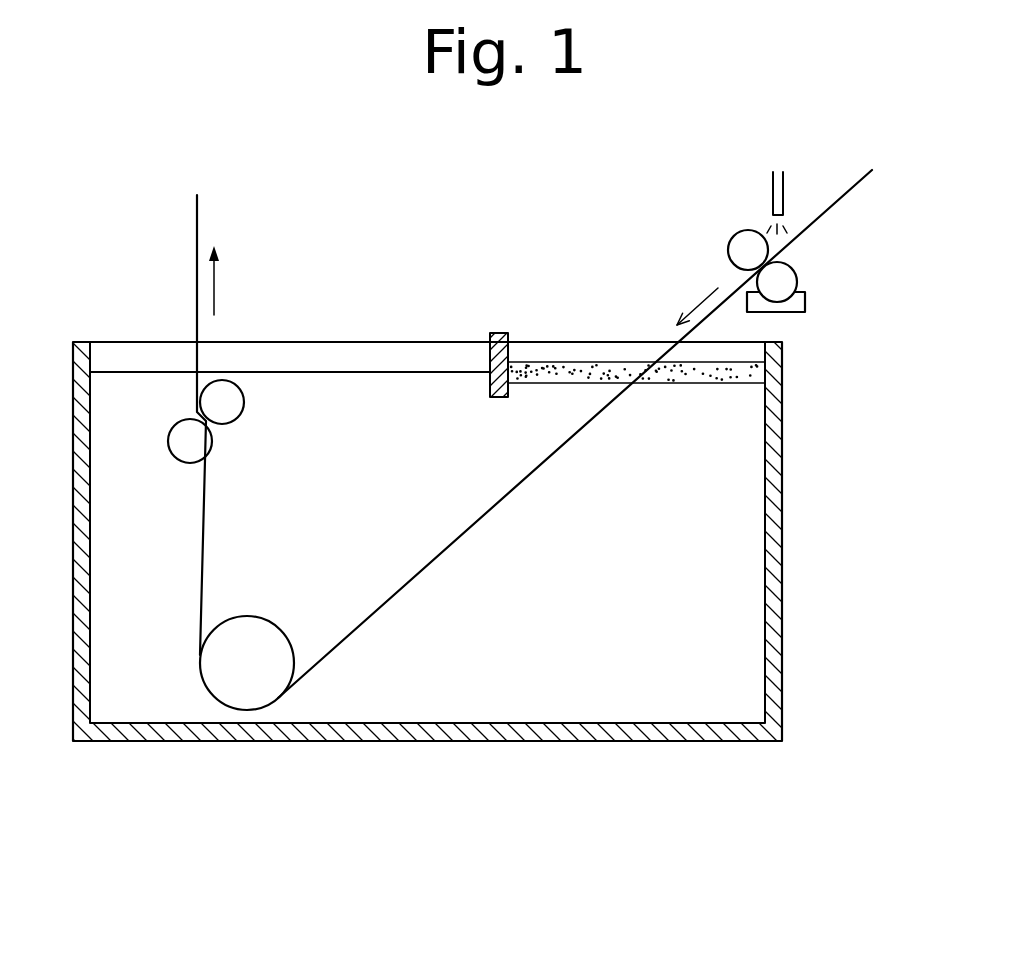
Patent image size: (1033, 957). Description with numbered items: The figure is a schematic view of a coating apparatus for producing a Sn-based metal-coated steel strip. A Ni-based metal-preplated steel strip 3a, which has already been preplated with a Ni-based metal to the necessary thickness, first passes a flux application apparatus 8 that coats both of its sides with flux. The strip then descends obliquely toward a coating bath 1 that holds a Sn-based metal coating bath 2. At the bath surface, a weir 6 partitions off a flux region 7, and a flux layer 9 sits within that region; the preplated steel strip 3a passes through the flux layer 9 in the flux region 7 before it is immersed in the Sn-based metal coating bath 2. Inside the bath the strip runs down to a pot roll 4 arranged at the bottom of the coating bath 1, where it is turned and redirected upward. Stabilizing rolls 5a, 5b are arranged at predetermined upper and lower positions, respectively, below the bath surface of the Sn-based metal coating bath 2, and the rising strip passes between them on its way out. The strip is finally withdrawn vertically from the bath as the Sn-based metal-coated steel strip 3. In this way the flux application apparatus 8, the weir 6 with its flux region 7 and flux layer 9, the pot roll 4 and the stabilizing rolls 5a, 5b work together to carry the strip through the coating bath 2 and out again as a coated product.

The coating bath 1 is at (773, 523).
The Sn-based metal coating bath 2 is at (575, 692).
The Sn-based metal-coated steel strip 3 is at (197, 225).
The Ni-based metal-preplated steel strip 3a is at (840, 197).
The pot roll 4 is at (245, 688).
The stabilizing roll 5a is at (181, 437).
The stabilizing roll 5b is at (228, 400).
The weir 6 is at (498, 333).
The flux region 7 is at (552, 300).
The flux application apparatus 8 is at (738, 210).
The flux layer 9 is at (605, 372).